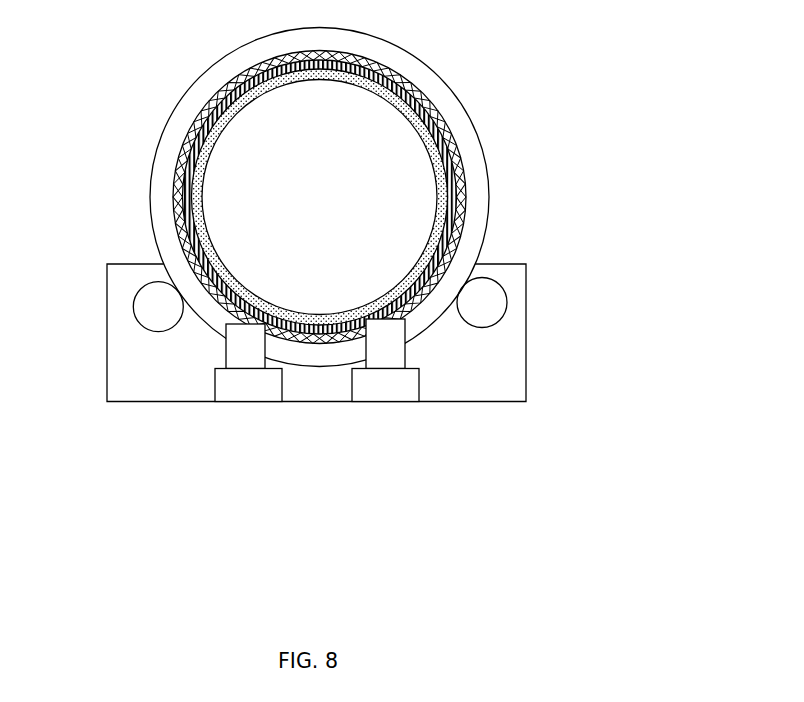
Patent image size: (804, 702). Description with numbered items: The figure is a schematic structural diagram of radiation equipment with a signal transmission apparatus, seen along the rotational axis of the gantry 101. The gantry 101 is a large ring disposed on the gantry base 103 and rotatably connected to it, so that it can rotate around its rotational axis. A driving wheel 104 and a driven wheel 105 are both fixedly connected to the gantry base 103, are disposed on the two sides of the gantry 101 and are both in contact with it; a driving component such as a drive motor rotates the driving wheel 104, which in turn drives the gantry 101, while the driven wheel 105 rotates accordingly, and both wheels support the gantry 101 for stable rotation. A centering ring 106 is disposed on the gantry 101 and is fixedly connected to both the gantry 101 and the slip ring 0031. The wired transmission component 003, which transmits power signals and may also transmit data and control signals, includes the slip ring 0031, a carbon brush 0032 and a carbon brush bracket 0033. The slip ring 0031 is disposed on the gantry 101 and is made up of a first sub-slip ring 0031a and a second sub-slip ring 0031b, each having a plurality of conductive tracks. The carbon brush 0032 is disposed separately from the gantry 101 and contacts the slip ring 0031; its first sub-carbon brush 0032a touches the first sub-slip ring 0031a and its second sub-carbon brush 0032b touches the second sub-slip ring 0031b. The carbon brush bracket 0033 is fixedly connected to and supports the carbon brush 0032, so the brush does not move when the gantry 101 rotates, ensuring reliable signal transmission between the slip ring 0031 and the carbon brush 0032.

The gantry 101 is at (163, 173).
The gantry base 103 is at (127, 278).
The driving wheel 104 is at (480, 303).
The driven wheel 105 is at (146, 307).
The centering ring 106 is at (217, 123).
The wired transmission component 003 is at (286, 319).
The slip ring 0031 is at (286, 281).
The first sub-slip ring 0031a is at (205, 290).
The second sub-slip ring 0031b is at (230, 306).
The carbon brush 0032 is at (315, 422).
The first sub-carbon brush 0032a is at (253, 355).
The second sub-carbon brush 0032b is at (390, 333).
The carbon brush bracket 0033 is at (341, 448).